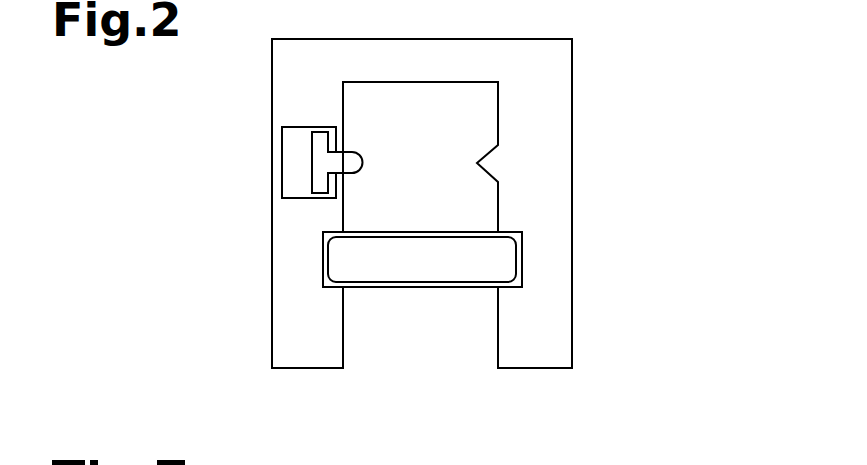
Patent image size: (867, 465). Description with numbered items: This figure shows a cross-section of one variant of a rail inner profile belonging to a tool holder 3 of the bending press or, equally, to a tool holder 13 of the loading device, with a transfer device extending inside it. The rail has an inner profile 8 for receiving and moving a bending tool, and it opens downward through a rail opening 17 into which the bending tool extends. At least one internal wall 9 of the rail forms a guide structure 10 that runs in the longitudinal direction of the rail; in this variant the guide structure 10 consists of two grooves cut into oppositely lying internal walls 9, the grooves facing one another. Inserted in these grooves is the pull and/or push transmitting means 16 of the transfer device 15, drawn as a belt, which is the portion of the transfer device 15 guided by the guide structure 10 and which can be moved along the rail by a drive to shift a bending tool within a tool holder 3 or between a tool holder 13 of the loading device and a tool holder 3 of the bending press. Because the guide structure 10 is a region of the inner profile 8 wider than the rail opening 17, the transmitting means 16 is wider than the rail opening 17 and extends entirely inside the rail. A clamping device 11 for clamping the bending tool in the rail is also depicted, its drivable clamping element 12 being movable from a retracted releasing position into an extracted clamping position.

The tool holder 3 is at (572, 137).
The tool holder 13 is at (521, 203).
The inner profile 8 is at (473, 347).
The internal wall 9 is at (345, 343).
The guide structure 10 is at (497, 284).
The clamping device 11 is at (303, 125).
The clamping element 12 is at (357, 151).
The transfer device 15 is at (322, 260).
The pull and/or push transmitting means 16 is at (427, 274).
The rail opening 17 is at (467, 398).